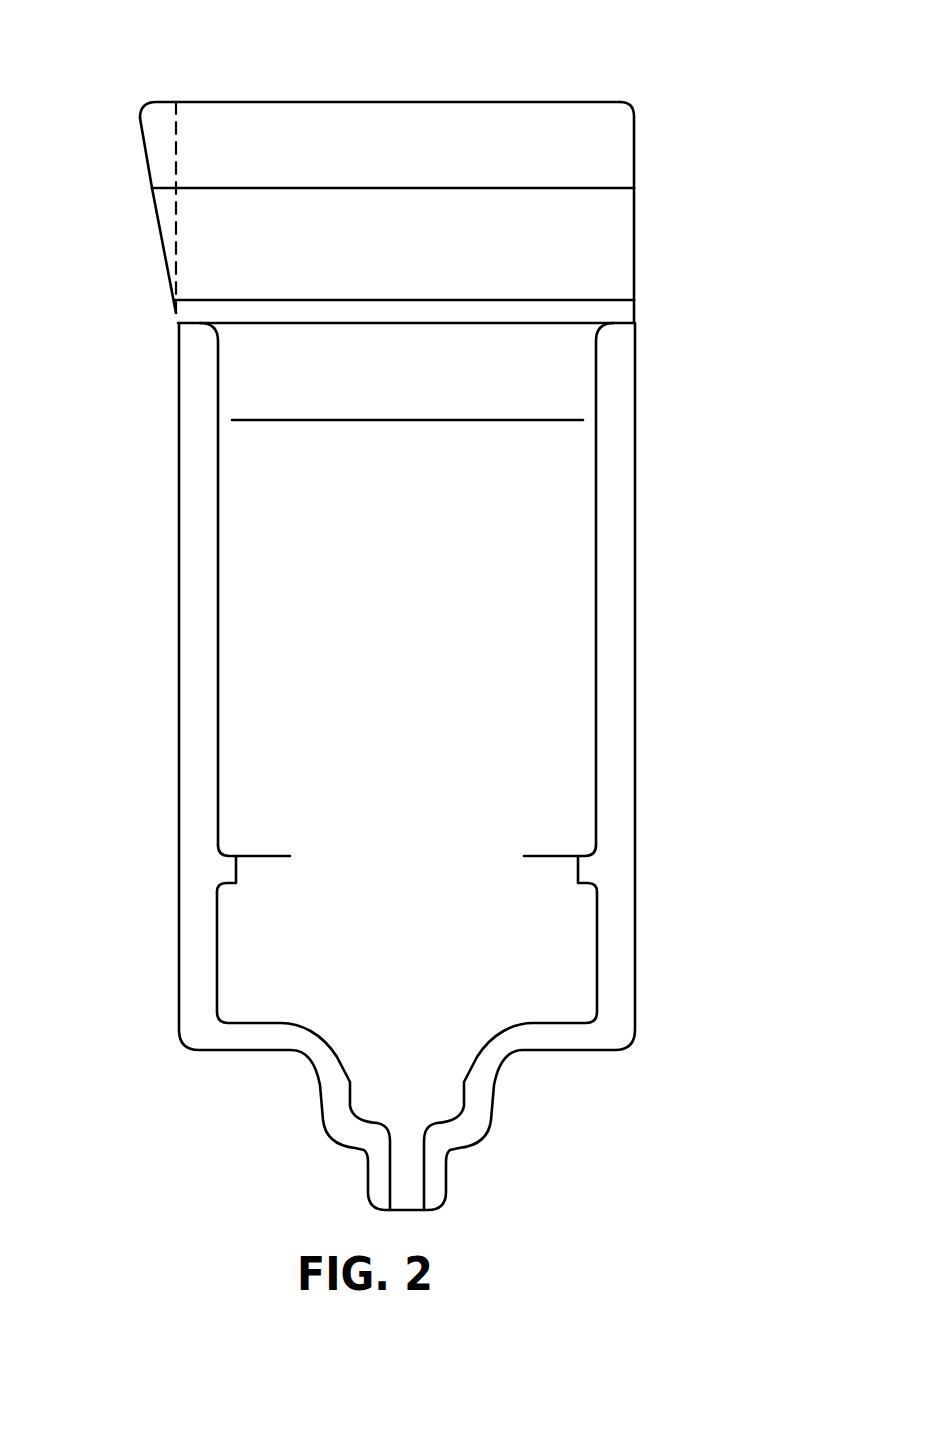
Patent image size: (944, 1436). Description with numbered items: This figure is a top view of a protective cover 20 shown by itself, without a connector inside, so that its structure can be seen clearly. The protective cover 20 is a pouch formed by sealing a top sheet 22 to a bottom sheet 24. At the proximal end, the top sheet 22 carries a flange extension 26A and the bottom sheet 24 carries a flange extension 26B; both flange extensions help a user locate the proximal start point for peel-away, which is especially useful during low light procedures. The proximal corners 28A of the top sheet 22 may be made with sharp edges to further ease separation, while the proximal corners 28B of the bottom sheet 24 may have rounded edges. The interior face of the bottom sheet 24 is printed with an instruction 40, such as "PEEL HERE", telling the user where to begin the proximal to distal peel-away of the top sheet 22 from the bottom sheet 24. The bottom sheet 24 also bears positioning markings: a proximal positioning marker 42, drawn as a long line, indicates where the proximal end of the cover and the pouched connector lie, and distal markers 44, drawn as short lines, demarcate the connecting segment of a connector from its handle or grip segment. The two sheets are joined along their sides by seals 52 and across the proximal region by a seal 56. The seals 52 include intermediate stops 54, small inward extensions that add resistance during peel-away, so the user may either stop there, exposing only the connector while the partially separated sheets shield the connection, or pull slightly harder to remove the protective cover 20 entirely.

The protective cover 20 is at (683, 41).
The top sheet 22 is at (588, 213).
The bottom sheet 24 is at (587, 137).
The flange extension 26A is at (168, 257).
The flange extension 26B is at (155, 127).
The proximal corners 28A is at (152, 190).
The proximal corners 28B is at (140, 102).
The instruction 40 is at (472, 224).
The proximal positioning marker 42 is at (557, 420).
The distal markers 44 is at (272, 855).
The seals 52 is at (203, 595).
The intermediate stops 54 is at (218, 870).
The seal 56 is at (615, 310).